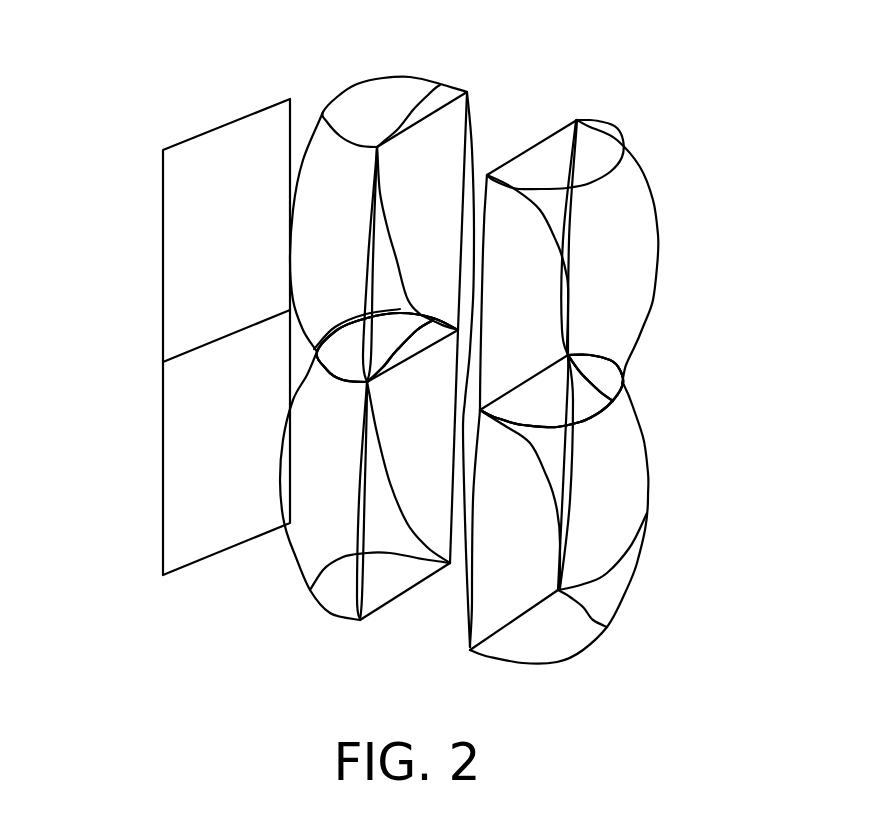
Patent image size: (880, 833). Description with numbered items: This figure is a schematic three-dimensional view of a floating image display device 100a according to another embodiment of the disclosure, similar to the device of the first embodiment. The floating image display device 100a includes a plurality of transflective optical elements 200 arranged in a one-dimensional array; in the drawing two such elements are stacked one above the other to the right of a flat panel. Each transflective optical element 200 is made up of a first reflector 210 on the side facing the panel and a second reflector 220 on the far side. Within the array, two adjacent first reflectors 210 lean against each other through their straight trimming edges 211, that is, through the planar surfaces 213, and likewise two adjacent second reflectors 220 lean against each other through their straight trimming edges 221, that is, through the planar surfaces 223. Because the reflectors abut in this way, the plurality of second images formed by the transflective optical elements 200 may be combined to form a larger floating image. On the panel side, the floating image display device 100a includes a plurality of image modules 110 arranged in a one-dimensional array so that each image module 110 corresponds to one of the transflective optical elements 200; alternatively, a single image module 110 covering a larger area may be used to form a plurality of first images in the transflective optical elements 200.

The floating image display device 100a is at (410, 353).
The image module 110 is at (190, 242).
The transflective optical element 200 is at (410, 335).
The first reflector 210 is at (368, 112).
The second reflector 220 is at (635, 177).
The straight trimming edge 211 is at (343, 360).
The planar surface 213 is at (343, 360).
The straight trimming edge 221 is at (593, 387).
The planar surface 223 is at (593, 387).